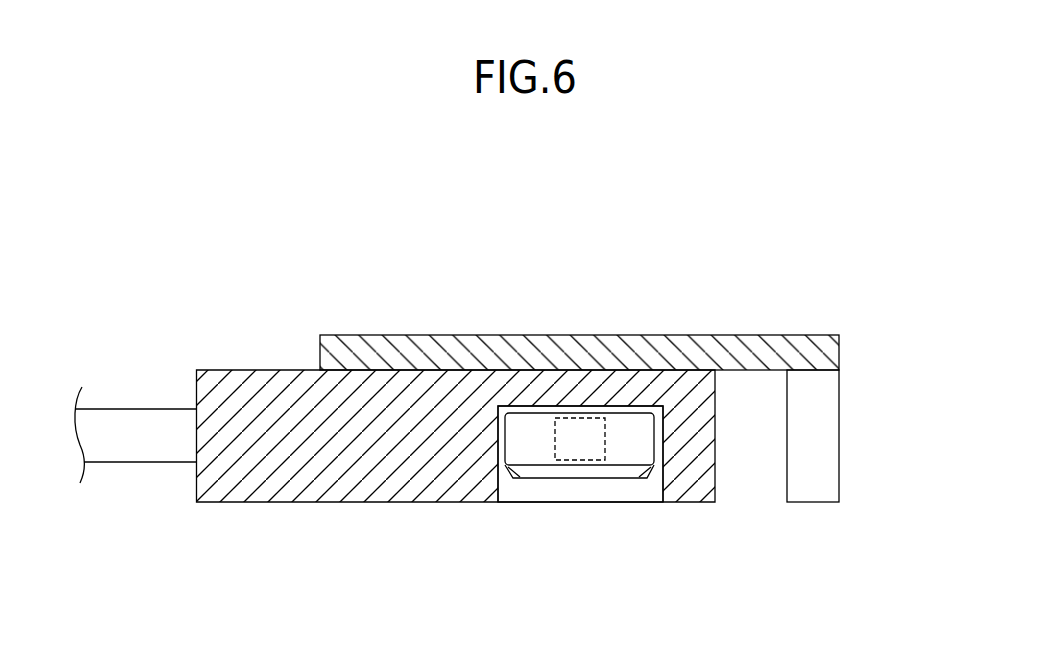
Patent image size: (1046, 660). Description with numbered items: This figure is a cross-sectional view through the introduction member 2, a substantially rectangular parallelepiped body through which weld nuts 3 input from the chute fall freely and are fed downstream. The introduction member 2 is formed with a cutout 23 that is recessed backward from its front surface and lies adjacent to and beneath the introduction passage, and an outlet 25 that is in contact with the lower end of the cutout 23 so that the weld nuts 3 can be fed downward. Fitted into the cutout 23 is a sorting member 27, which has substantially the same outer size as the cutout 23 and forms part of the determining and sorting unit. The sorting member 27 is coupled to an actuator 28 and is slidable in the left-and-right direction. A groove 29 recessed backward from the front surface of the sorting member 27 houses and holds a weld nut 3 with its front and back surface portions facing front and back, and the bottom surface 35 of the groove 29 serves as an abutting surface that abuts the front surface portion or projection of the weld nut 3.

The introduction member 2 is at (859, 343).
The weld nut 3 is at (634, 415).
The cutout 23 is at (748, 462).
The outlet 25 is at (823, 454).
The sorting member 27 is at (382, 495).
The actuator 28 is at (132, 448).
The groove 29 is at (583, 490).
The bottom surface 35 is at (580, 404).